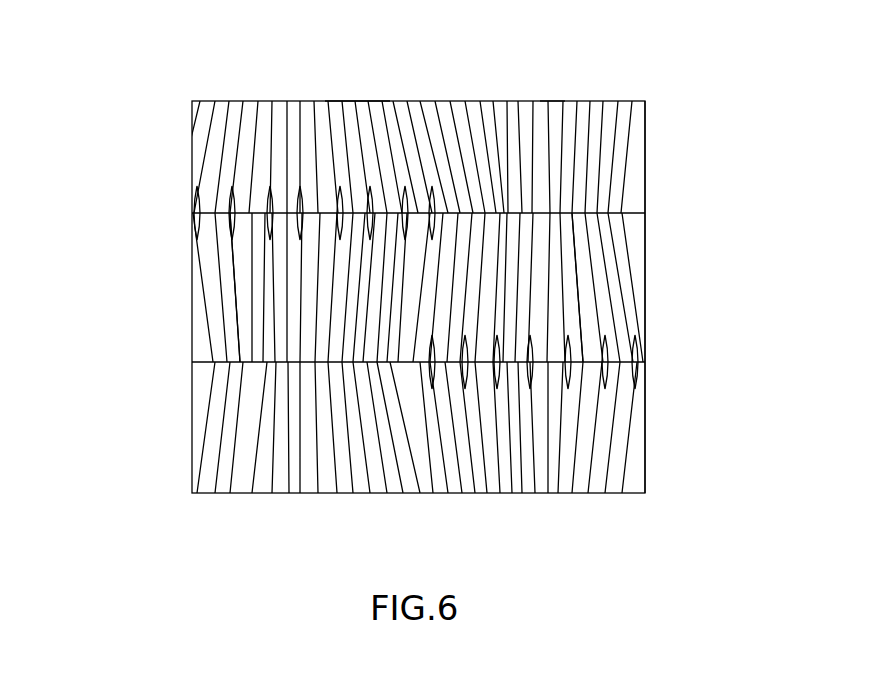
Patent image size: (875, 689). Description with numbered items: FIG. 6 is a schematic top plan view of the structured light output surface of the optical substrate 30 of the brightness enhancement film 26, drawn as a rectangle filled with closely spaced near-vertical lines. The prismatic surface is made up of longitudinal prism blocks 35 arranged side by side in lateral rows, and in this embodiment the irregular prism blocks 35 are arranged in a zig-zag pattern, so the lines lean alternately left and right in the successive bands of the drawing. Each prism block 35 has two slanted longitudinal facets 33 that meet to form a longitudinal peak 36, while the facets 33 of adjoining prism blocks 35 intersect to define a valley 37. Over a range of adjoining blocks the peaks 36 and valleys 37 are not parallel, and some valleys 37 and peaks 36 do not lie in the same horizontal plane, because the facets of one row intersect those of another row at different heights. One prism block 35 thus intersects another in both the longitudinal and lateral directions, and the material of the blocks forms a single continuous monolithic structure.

The brightness enhancement film 26 is at (684, 122).
The optical substrate 30 is at (168, 128).
The longitudinal facets 33 is at (554, 77).
The prism blocks 35 is at (342, 76).
The longitudinal peak 36 is at (605, 260).
The valley 37 is at (215, 289).